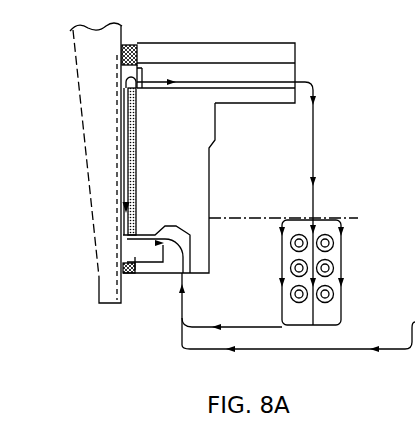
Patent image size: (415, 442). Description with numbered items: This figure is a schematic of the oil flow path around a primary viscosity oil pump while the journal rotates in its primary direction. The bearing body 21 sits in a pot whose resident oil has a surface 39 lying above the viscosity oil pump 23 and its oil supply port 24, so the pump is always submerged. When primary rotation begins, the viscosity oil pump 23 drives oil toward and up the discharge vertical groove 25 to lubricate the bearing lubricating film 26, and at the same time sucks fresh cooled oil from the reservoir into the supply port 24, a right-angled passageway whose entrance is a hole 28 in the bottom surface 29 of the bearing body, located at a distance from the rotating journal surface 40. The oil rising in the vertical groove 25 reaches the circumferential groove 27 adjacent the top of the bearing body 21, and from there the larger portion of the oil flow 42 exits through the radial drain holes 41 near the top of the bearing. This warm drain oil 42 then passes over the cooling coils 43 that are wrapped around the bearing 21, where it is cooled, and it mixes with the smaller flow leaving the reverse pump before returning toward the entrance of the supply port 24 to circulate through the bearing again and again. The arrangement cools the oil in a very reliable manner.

The bearing body 21 is at (243, 55).
The viscosity oil pump 23 is at (137, 250).
The oil supply port 24 is at (132, 266).
The discharge vertical groove 25 is at (118, 192).
The bearing lubricating film 26 is at (118, 158).
The circumferential groove 27 is at (130, 72).
The hole 28 is at (170, 273).
The bottom surface 29 is at (199, 276).
The surface of the oil 39 is at (343, 218).
The rotating journal surface 40 is at (95, 111).
The radial drain holes 41 is at (152, 72).
The oil flow 42 is at (313, 86).
The cooling coils 43 is at (329, 299).